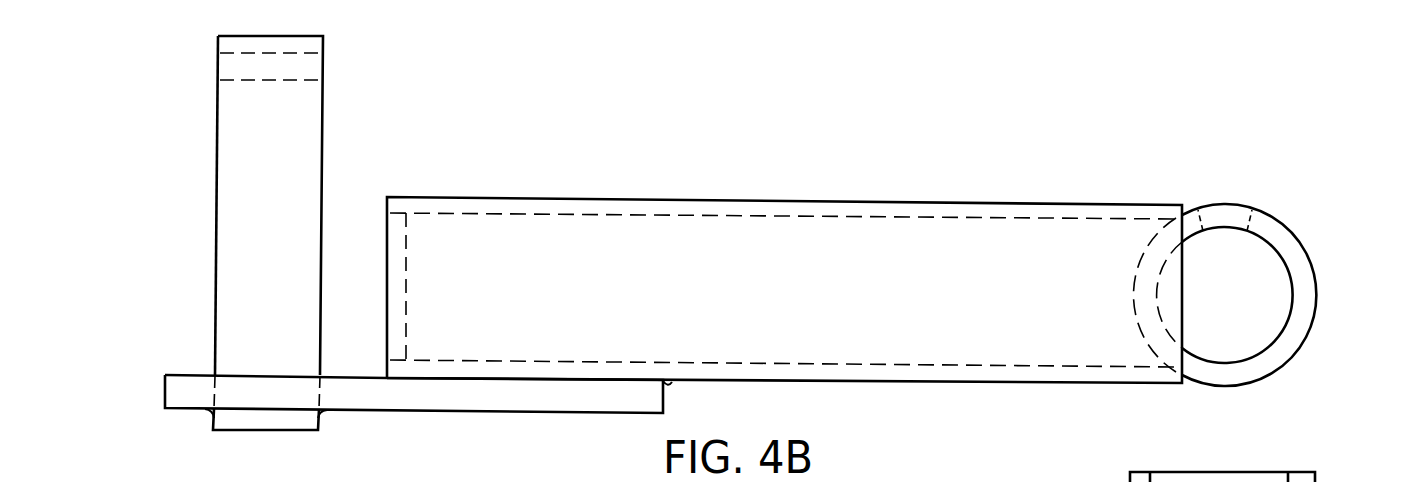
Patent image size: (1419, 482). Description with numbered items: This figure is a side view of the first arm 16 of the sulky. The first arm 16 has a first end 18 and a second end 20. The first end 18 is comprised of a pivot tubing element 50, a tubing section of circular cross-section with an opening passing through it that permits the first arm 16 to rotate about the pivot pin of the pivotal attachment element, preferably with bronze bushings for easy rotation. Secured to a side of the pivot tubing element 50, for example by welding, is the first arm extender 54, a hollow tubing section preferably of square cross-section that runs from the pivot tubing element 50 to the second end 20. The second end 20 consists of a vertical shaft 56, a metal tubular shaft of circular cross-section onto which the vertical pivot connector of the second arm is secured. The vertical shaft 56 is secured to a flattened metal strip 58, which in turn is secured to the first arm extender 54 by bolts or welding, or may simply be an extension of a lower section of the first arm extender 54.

The first arm 16 is at (639, 183).
The first end 18 is at (1319, 299).
The second end 20 is at (172, 370).
The pivot tubing element 50 is at (1274, 236).
The first arm extender 54 is at (748, 234).
The vertical shaft 56 is at (288, 143).
The flattened metal strip 58 is at (352, 390).